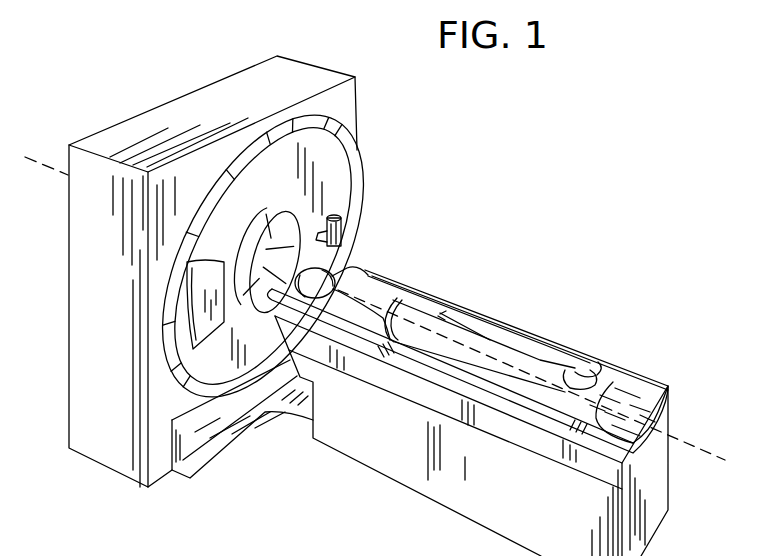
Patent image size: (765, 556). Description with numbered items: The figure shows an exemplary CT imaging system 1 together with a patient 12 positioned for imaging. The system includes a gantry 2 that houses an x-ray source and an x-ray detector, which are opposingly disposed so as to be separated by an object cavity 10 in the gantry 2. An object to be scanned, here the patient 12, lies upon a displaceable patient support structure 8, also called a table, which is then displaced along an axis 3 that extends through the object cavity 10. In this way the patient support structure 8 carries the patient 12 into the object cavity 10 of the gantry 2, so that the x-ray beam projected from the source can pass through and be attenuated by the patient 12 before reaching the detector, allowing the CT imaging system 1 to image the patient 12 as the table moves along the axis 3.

The CT imaging system 1 is at (323, 63).
The gantry 2 is at (115, 132).
The axis 3 is at (690, 440).
The patient support structure 8 is at (668, 386).
The object cavity 10 is at (258, 247).
The patient 12 is at (373, 292).